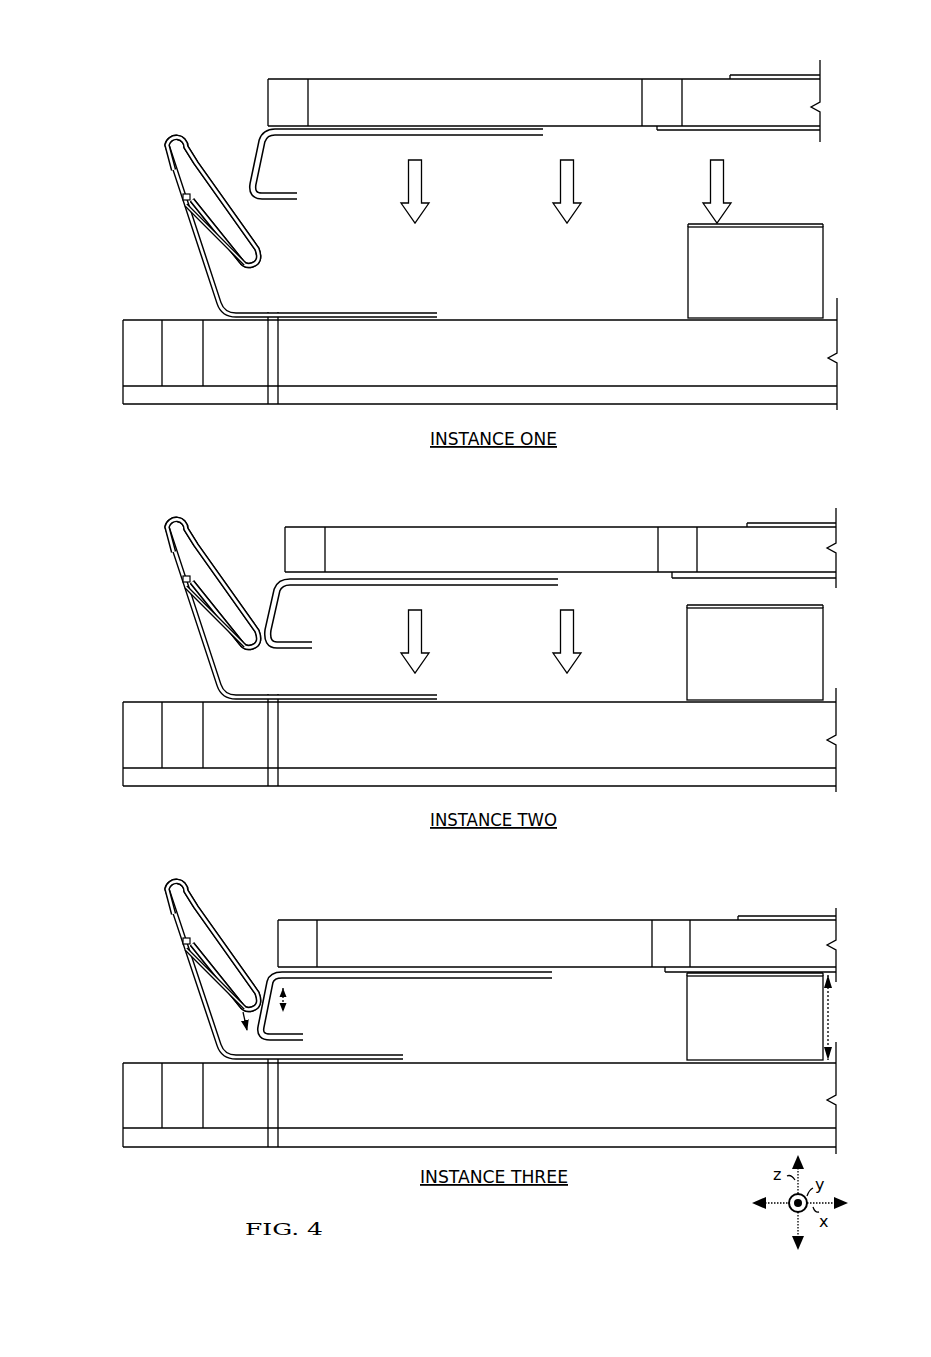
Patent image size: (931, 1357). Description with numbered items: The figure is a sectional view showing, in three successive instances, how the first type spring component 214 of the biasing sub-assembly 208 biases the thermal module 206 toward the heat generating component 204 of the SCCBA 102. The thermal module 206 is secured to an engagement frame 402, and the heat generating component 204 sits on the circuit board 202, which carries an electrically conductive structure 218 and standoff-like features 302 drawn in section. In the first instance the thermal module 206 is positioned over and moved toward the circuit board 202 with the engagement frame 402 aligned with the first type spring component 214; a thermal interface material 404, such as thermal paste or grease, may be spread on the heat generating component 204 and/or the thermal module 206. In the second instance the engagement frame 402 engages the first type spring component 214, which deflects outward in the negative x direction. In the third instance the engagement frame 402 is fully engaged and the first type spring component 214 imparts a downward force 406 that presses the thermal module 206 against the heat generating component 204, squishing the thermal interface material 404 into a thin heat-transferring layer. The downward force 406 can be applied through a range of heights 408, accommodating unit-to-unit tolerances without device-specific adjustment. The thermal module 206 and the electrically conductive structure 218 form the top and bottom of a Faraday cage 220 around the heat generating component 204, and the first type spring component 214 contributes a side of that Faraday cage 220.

The SCCBA 102 is at (215, 41).
The circuit board 202 is at (480, 726).
The heat generating component 204 is at (755, 643).
The thermal module 206 is at (552, 521).
The biasing sub-assembly 208 is at (183, 1032).
The first type spring component 214 is at (177, 872).
The electrically conductive structure 218 is at (353, 385).
The Faraday cage 220 is at (757, 893).
The standoff 302 is at (281, 356).
The engagement frame 402 is at (262, 160).
The thermal interface material 404 is at (687, 977).
The downward force 406 is at (227, 1017).
The range of heights 408 is at (845, 1017).